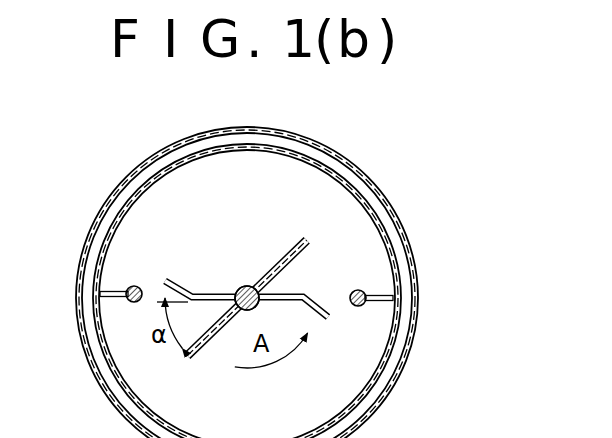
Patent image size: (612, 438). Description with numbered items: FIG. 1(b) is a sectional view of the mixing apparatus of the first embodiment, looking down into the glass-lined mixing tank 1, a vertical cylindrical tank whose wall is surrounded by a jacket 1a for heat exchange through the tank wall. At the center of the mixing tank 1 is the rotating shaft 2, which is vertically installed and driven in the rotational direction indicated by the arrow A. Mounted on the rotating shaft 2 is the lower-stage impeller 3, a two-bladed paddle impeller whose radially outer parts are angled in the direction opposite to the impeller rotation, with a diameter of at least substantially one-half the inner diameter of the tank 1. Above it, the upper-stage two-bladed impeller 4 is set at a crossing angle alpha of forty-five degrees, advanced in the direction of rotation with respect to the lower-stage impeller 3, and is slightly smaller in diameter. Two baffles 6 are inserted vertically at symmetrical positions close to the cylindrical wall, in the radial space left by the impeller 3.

The mixing tank 1 is at (350, 180).
The jacket 1a is at (404, 240).
The rotating shaft 2 is at (242, 290).
The lower-stage impeller 3 is at (178, 280).
The upper-stage two-bladed impeller 4 is at (287, 250).
The baffles 6 is at (111, 298).